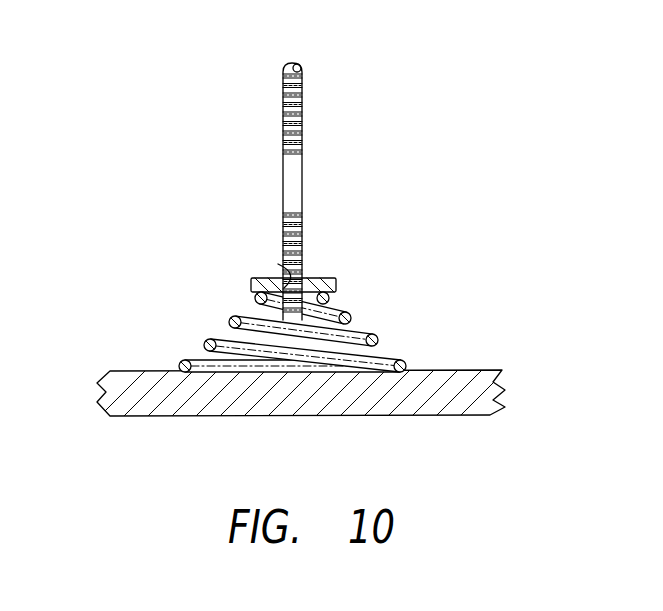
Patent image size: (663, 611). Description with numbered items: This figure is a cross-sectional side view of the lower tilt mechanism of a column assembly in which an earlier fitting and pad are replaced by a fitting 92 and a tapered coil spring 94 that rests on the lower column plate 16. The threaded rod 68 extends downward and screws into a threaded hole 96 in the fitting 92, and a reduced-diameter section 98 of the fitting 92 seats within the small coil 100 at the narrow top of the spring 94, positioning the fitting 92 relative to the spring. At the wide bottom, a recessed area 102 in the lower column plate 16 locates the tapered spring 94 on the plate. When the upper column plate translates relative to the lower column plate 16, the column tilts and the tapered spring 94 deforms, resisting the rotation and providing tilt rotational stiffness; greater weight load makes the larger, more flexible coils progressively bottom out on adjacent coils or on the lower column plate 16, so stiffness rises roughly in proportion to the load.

The lower column plate 16 is at (438, 416).
The threaded rod 68 is at (304, 187).
The fitting 92 is at (316, 278).
The tapered coil spring 94 is at (378, 340).
The threaded hole 96 is at (278, 264).
The reduced-diameter section 98 is at (330, 296).
The small coil 100 is at (255, 298).
The recessed area 102 is at (227, 375).